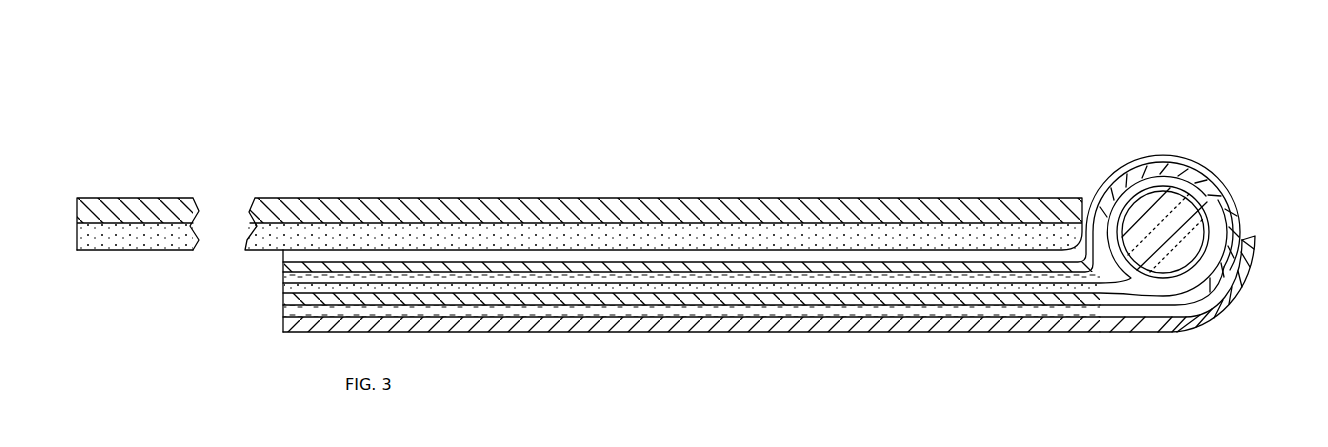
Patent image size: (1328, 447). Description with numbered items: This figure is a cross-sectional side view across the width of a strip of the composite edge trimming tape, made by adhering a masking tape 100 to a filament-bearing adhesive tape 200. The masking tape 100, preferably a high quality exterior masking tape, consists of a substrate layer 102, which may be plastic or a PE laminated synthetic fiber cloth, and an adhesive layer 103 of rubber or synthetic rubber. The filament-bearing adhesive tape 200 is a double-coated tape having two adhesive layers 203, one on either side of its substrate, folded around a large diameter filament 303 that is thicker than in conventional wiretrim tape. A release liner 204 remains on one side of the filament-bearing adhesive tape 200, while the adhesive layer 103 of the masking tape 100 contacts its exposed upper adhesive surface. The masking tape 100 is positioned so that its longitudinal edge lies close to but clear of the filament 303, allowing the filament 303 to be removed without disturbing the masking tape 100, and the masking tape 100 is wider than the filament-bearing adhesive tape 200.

The masking tape 100 is at (595, 172).
The substrate layer 102 is at (112, 198).
The adhesive layer 103 is at (130, 250).
The filament-bearing adhesive tape 200 is at (1073, 192).
The adhesive layers 203 is at (283, 306).
The release liner 204 is at (1140, 333).
The filament 303 is at (1195, 195).